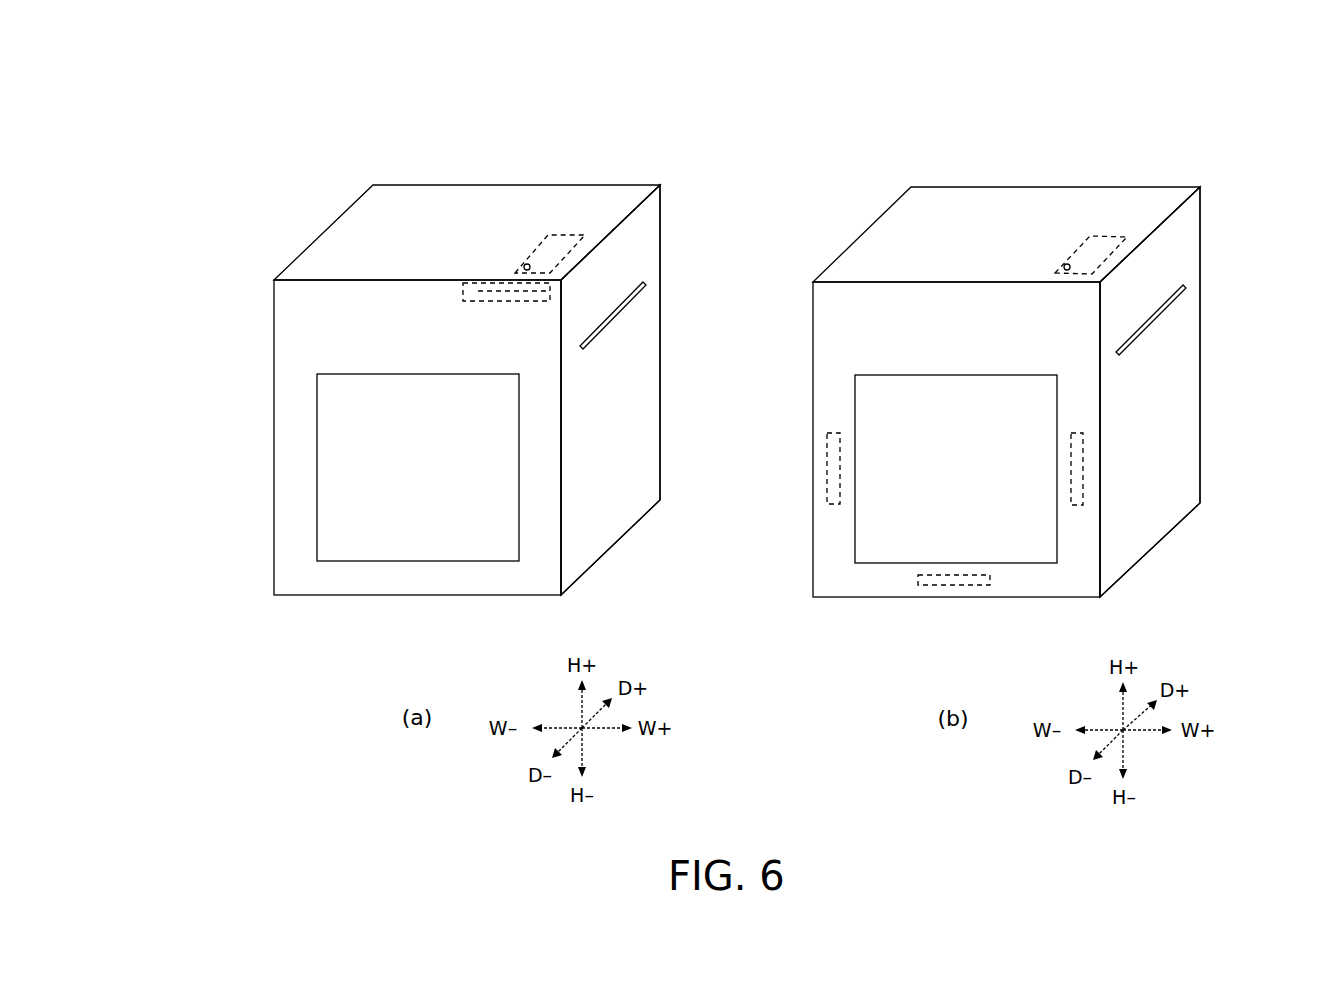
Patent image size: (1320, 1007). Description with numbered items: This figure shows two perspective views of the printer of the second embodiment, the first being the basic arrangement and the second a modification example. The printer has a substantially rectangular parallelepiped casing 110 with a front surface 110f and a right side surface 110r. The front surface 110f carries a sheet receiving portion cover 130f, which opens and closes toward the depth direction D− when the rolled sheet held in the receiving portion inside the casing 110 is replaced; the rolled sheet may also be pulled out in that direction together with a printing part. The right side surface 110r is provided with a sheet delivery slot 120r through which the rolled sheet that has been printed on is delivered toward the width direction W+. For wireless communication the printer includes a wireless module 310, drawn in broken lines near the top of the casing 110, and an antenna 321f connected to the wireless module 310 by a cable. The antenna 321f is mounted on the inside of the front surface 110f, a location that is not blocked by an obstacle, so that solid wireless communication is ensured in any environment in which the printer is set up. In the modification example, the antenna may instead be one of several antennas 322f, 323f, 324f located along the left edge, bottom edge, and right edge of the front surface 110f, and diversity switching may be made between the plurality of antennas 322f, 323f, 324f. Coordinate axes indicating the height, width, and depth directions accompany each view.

The casing 110 is at (375, 243).
The front surface 110f is at (300, 403).
The right side surface 110r is at (613, 423).
The sheet delivery slot 120r is at (613, 313).
The sheet receiving portion cover 130f is at (421, 468).
The wireless module 310 is at (572, 233).
The antenna 321f is at (500, 280).
The antenna 322f is at (826, 488).
The antenna 323f is at (990, 580).
The antenna 324f is at (1084, 490).